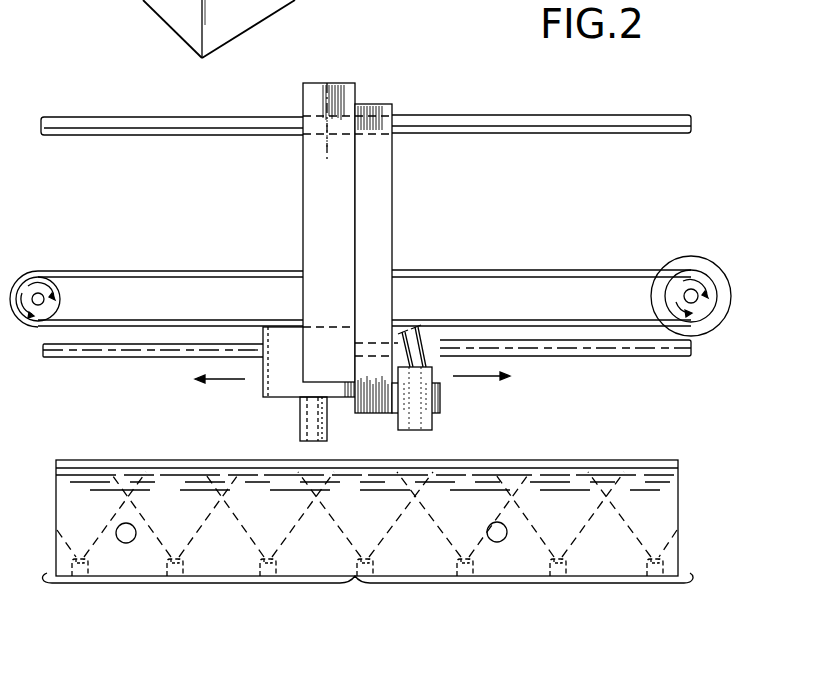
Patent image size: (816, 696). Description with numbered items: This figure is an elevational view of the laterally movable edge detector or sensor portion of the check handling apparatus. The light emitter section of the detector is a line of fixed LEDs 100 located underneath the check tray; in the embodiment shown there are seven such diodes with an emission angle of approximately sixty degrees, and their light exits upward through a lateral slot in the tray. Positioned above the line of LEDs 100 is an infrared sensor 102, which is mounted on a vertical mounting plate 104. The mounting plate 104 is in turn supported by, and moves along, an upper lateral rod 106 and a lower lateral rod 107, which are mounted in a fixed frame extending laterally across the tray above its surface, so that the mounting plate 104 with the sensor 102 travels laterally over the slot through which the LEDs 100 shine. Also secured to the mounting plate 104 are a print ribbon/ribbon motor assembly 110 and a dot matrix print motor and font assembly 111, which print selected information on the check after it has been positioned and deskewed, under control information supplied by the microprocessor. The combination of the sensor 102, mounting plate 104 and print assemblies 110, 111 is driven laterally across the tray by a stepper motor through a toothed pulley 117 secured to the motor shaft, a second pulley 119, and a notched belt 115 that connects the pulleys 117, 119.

The fixed LEDs 100 is at (355, 584).
The infrared sensor 102 is at (433, 413).
The vertical mounting plate 104 is at (377, 229).
The upper lateral rod 106 is at (447, 118).
The lower lateral rod 107 is at (635, 348).
The print ribbon/ribbon motor assembly 110 is at (337, 100).
The dot matrix print motor and font assembly 111 is at (268, 397).
The notched belt 115 is at (533, 268).
The toothed pulley 117 is at (713, 258).
The pulley 119 is at (42, 276).